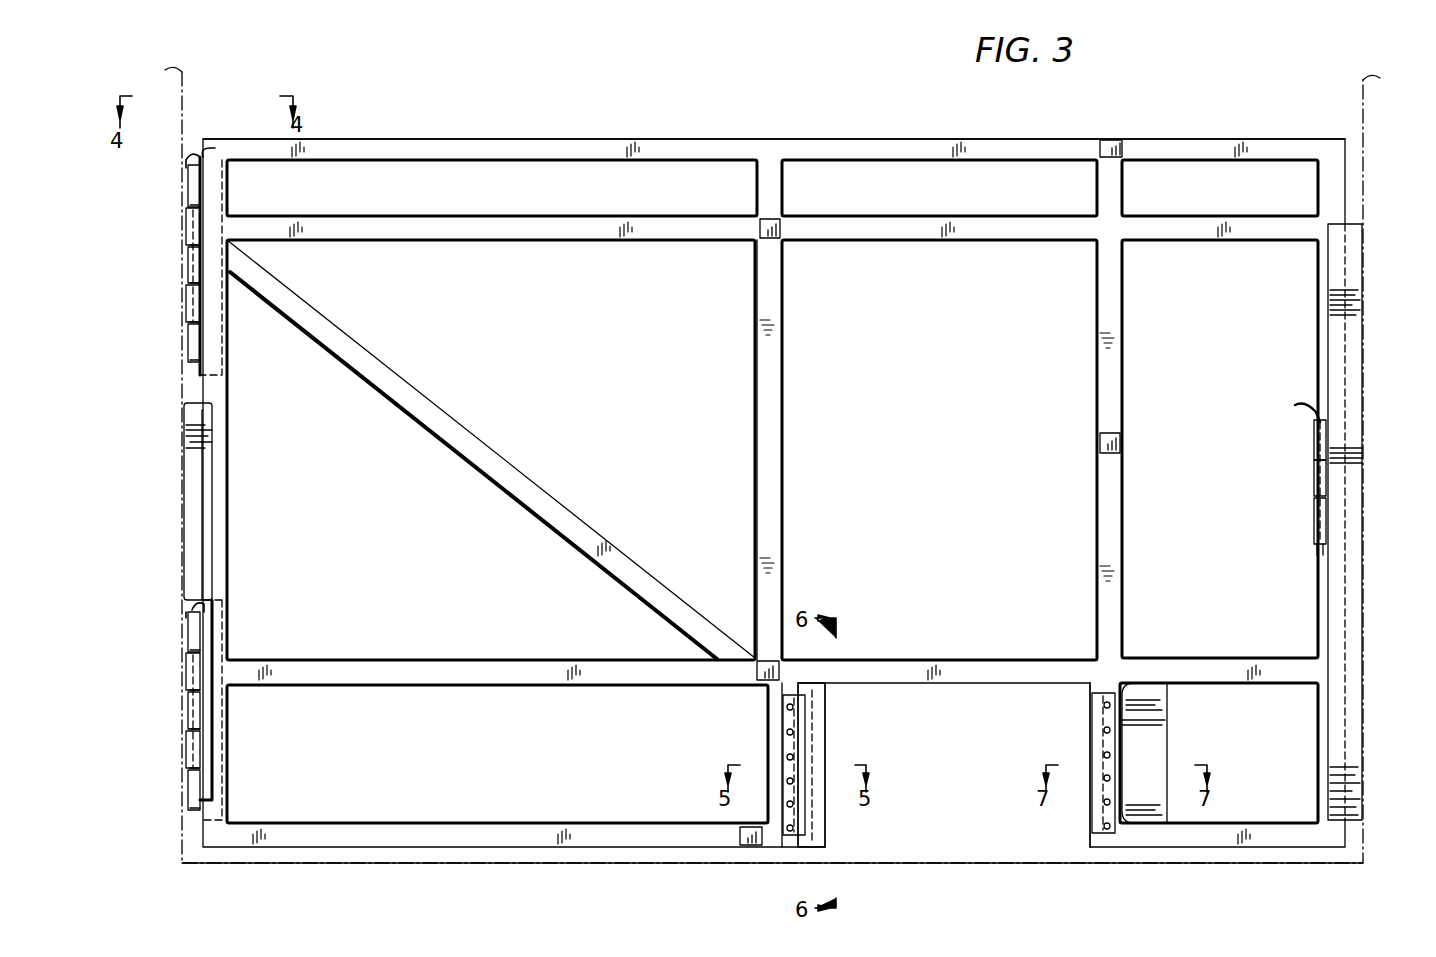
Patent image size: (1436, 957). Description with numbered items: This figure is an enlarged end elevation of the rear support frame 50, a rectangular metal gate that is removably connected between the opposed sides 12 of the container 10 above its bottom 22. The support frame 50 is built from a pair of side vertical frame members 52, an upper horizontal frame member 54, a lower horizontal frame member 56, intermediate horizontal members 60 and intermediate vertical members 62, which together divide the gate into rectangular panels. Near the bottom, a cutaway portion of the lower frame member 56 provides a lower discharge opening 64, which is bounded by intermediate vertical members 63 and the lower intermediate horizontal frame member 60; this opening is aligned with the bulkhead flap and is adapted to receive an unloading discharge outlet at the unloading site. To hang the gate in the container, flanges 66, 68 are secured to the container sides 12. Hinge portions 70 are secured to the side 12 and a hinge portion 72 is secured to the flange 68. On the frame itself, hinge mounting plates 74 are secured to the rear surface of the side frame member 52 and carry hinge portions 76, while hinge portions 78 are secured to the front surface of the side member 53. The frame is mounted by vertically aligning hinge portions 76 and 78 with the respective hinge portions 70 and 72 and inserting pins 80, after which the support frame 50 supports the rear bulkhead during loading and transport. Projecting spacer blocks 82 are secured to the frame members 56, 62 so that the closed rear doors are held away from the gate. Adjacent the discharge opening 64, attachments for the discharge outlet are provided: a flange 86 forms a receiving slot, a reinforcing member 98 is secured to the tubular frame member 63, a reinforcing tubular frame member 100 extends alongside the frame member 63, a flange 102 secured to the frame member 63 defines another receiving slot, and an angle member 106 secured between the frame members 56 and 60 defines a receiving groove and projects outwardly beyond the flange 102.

The container 10 is at (1385, 127).
The sides 12 is at (1360, 188).
The bottom 22 is at (312, 862).
The support frame 50 is at (1012, 136).
The side vertical frame members 52 is at (222, 376).
The side member 53 is at (1318, 279).
The upper horizontal frame member 54 is at (533, 138).
The lower horizontal frame member 56 is at (433, 828).
The intermediate horizontal members 60 is at (972, 664).
The intermediate vertical members 62 is at (782, 424).
The intermediate vertical members 63 is at (778, 722).
The lower discharge opening 64 is at (950, 815).
The flange 66 is at (205, 440).
The flange 68 is at (1345, 312).
The hinge portions 70 is at (186, 226).
The hinge portion 72 is at (1314, 480).
The hinge mounting plates 74 is at (222, 343).
The hinge portions 76 is at (188, 186).
The hinge portions 78 is at (1314, 436).
The pins 80 is at (192, 152).
The spacer blocks 82 is at (1110, 138).
The flange 86 is at (798, 709).
The reinforcing member 98 is at (814, 742).
The reinforcing tubular frame member 100 is at (1150, 715).
The flange 102 is at (1100, 828).
The angle member 106 is at (1160, 740).